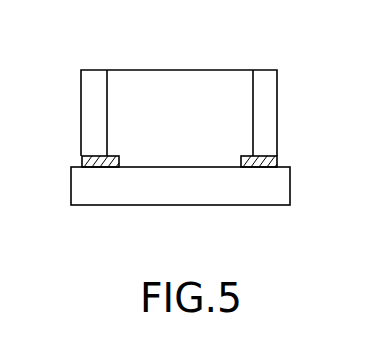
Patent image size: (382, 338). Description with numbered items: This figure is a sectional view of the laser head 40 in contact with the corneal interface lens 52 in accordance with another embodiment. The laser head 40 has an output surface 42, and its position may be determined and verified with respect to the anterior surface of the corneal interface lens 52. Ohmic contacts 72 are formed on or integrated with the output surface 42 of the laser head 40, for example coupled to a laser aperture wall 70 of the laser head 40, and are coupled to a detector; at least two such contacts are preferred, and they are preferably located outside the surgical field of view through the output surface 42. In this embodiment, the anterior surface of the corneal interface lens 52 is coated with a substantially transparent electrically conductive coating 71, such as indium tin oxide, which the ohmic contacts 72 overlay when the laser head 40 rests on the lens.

The laser head 40 is at (151, 78).
The laser aperture wall 70 is at (263, 82).
The substantially transparent electrically conductive coating 71 is at (190, 166).
The ohmic contacts 72 is at (78, 152).
The output surface 42 is at (268, 141).
The corneal interface lens 52 is at (113, 198).